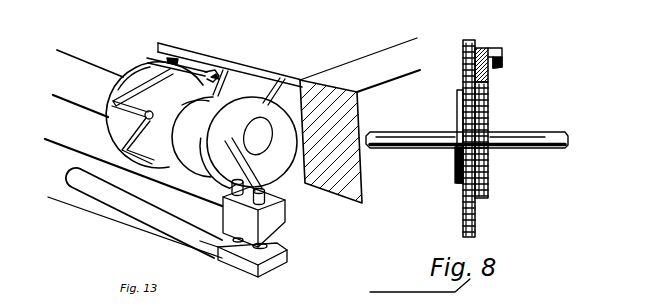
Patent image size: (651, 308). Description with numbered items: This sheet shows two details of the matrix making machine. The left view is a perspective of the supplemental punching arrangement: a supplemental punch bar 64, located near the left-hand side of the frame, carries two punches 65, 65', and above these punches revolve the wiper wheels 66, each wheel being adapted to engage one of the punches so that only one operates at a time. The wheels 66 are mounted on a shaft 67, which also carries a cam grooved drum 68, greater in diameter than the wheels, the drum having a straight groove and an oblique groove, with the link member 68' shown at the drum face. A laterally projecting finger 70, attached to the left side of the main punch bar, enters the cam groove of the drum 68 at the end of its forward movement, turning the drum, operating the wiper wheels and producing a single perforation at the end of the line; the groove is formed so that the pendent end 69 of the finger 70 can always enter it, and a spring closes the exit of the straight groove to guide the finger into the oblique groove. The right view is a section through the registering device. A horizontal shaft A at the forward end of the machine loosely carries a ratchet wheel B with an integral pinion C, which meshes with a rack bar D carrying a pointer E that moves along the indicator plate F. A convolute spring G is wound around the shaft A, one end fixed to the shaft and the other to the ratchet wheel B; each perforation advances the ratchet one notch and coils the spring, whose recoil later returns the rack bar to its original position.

In FIG. 13, the supplemental punch bar 64 is at (272, 225).
In FIG. 13, the punch 65 is at (276, 214).
In FIG. 13, the punch 65' is at (135, 213).
In FIG. 13, the wiper wheel 66 is at (277, 138).
In FIG. 13, the shaft 67 is at (192, 137).
In FIG. 13, the cam grooved drum 68 is at (154, 94).
In FIG. 13, the drum link arm 68' is at (121, 87).
In FIG. 13, the pendent end 69 is at (190, 45).
In FIG. 13, the laterally projecting finger 70 is at (265, 64).
In FIG. 8, the horizontal shaft A is at (547, 132).
In FIG. 8, the ratchet wheel B is at (463, 60).
In FIG. 8, the pinion C is at (488, 177).
In FIG. 8, the rack bar D is at (486, 50).
In FIG. 8, the pointer E is at (503, 57).
In FIG. 8, the indicator plate F is at (500, 69).
In FIG. 8, the convolute spring G is at (457, 107).